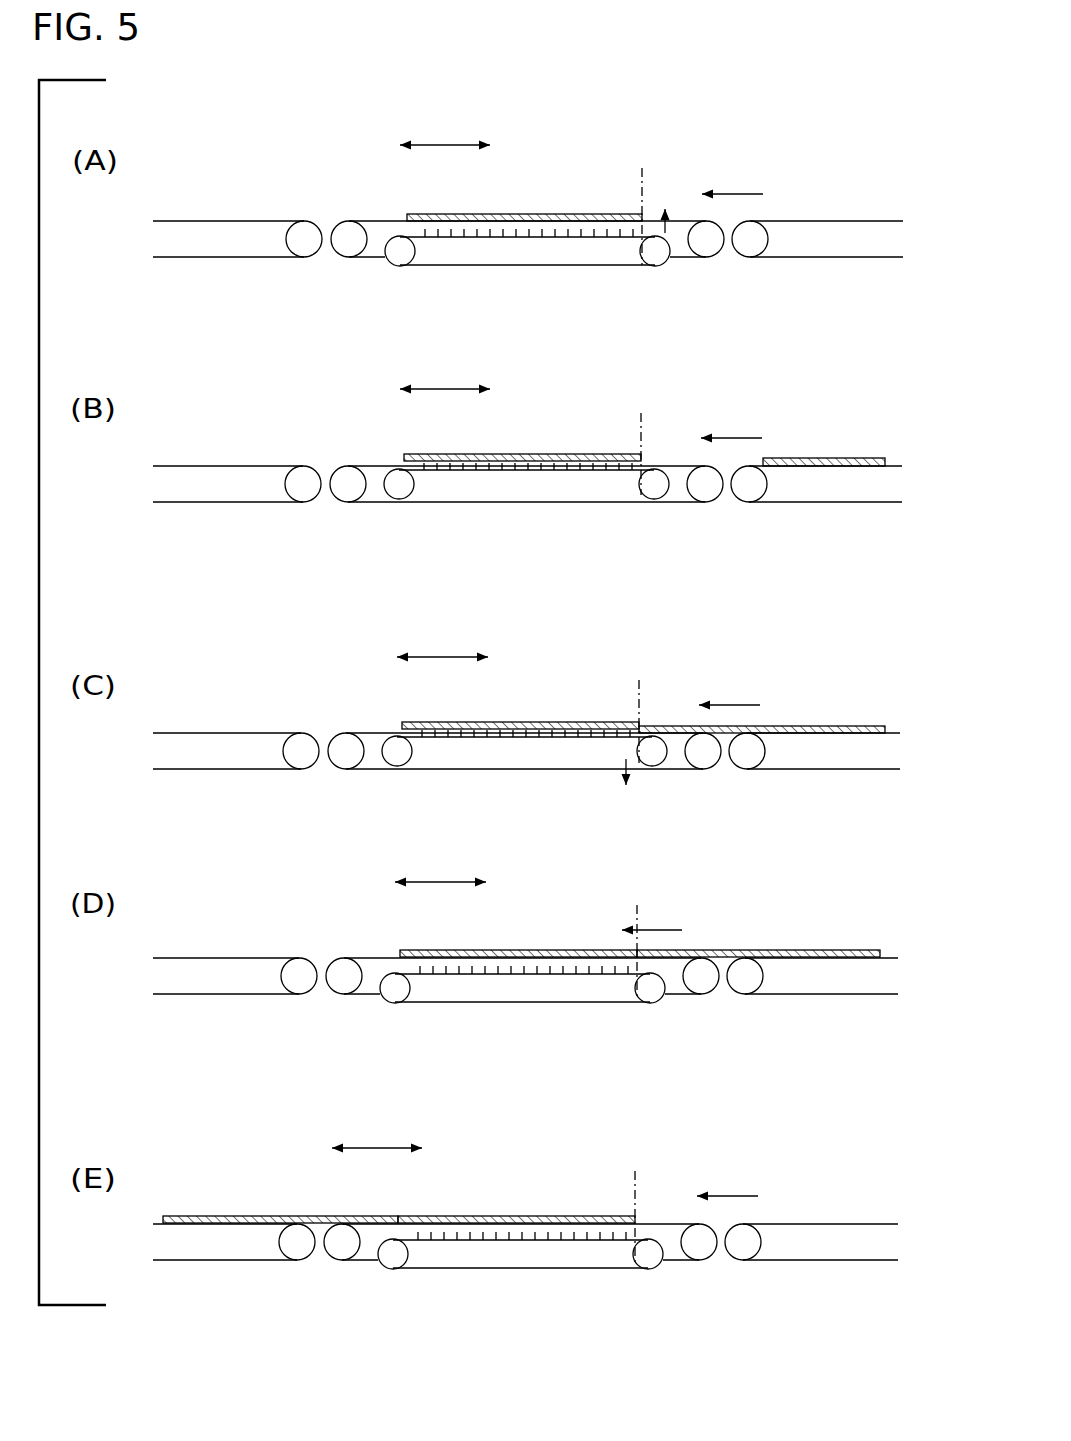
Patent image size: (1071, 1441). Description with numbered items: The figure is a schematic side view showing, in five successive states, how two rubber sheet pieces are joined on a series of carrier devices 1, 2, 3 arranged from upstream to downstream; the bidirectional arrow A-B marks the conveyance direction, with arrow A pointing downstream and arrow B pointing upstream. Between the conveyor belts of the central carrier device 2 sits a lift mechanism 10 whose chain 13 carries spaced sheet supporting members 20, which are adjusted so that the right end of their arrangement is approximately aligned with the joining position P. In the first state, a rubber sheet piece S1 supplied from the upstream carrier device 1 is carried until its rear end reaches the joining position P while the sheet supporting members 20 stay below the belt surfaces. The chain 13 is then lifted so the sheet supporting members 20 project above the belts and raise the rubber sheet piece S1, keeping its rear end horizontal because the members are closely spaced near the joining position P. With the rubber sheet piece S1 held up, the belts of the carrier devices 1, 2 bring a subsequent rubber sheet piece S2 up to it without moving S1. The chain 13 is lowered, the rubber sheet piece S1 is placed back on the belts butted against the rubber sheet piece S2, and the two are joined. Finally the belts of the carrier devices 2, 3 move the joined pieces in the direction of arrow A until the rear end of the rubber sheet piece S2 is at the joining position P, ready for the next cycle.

The carrier device 1 is at (849, 219).
The carrier device 2 is at (371, 219).
The carrier device 3 is at (216, 219).
The lift mechanism 10 is at (527, 242).
The chain 13 is at (422, 266).
The sheet supporting members 20 is at (506, 236).
The rubber sheet piece S1 is at (553, 213).
The rubber sheet piece S2 is at (802, 457).
The joining position P is at (642, 168).
The arrow A is at (442, 122).
The arrow B is at (486, 119).